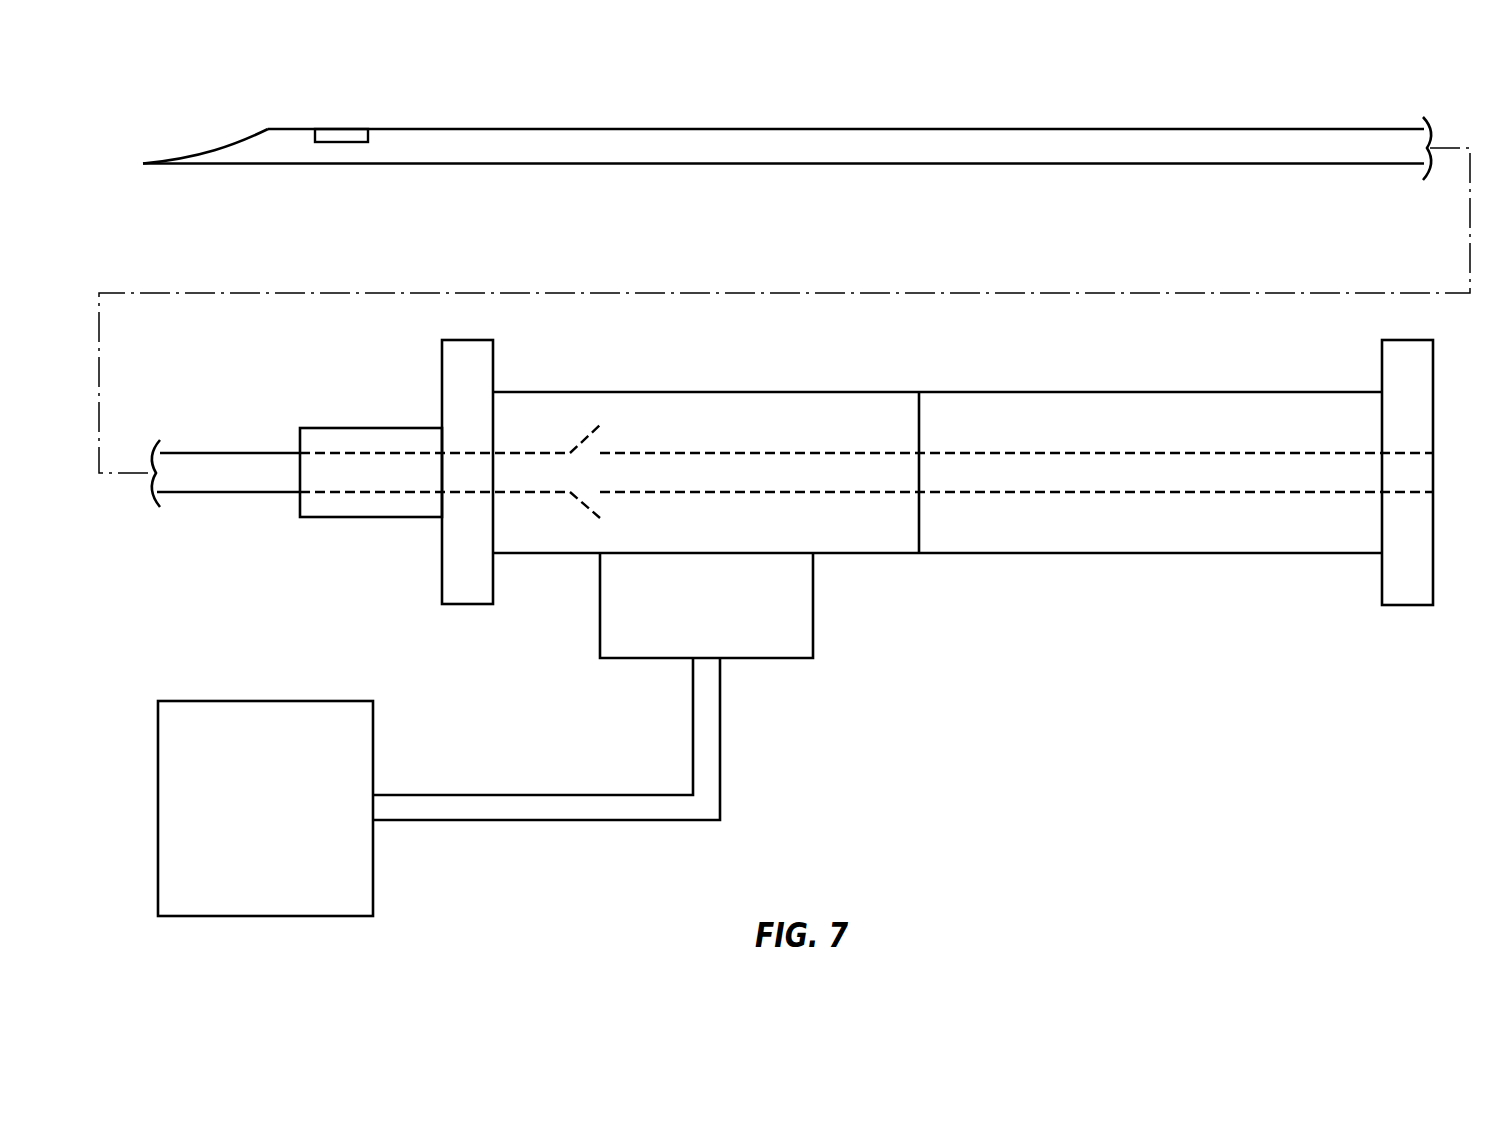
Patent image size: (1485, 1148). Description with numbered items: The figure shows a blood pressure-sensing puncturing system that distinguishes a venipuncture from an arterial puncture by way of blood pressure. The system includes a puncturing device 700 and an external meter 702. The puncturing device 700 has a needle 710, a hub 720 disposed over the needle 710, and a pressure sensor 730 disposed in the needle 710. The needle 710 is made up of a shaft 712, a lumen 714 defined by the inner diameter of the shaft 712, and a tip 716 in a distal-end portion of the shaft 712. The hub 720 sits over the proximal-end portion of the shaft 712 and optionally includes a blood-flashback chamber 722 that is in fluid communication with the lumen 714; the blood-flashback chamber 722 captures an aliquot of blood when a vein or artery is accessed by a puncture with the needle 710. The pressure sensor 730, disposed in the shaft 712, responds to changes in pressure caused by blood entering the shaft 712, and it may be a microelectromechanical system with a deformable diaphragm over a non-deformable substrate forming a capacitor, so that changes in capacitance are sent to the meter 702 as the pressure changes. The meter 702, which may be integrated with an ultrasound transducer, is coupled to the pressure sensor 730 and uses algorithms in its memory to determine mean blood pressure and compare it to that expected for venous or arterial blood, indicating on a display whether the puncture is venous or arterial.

The puncturing device 700 is at (922, 795).
The external meter 702 is at (265, 690).
The needle 710 is at (1103, 108).
The shaft 712 is at (197, 458).
The lumen 714 is at (290, 473).
The tip 716 is at (235, 142).
The hub 720 is at (1137, 587).
The blood-flashback chamber 722 is at (697, 437).
The pressure sensor 730 is at (353, 135).